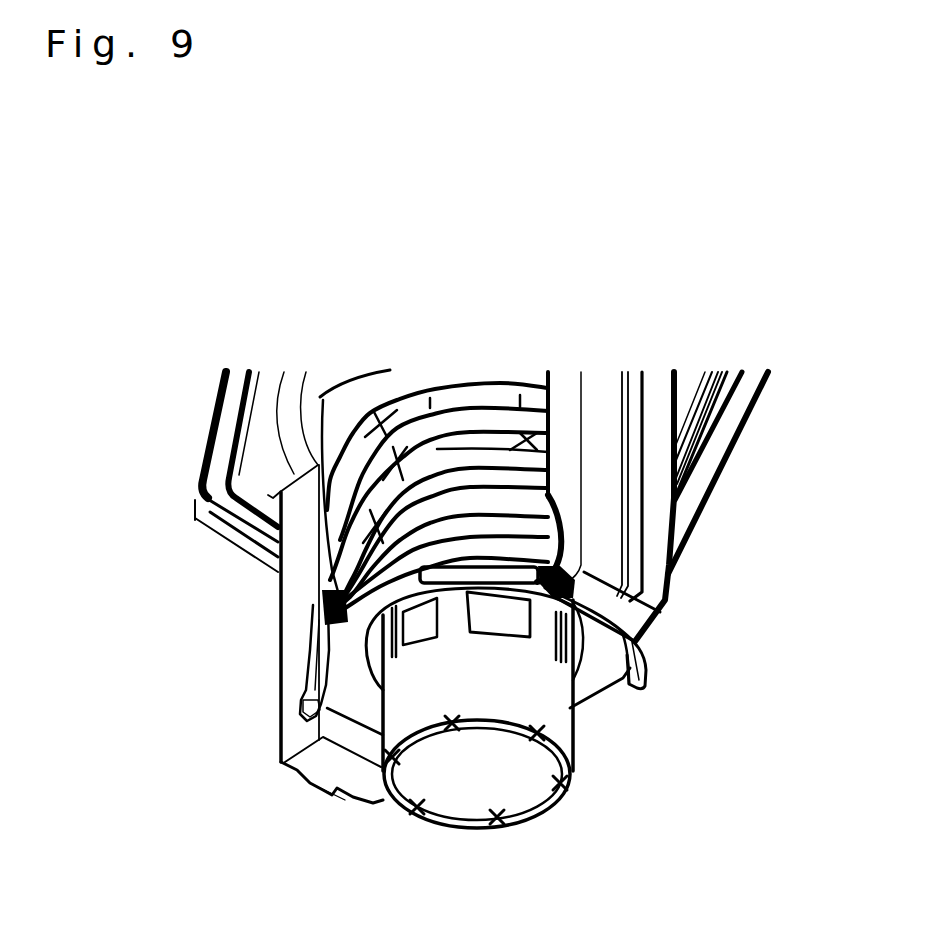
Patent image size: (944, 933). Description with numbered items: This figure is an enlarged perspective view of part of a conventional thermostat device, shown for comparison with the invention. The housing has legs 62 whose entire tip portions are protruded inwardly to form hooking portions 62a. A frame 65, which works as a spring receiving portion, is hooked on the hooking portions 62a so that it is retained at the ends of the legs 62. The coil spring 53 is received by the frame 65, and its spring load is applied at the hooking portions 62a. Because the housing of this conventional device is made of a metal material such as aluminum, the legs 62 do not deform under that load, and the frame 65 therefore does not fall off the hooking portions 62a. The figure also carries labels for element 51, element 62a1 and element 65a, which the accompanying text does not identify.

The coil spring 51 is at (470, 455).
The coil spring 53 is at (318, 558).
The leg 62 is at (605, 506).
The hooking portion 62a is at (612, 610).
The engaging projection 62a1 is at (598, 565).
The frame 65 is at (600, 673).
The engaging claw 65a is at (560, 538).